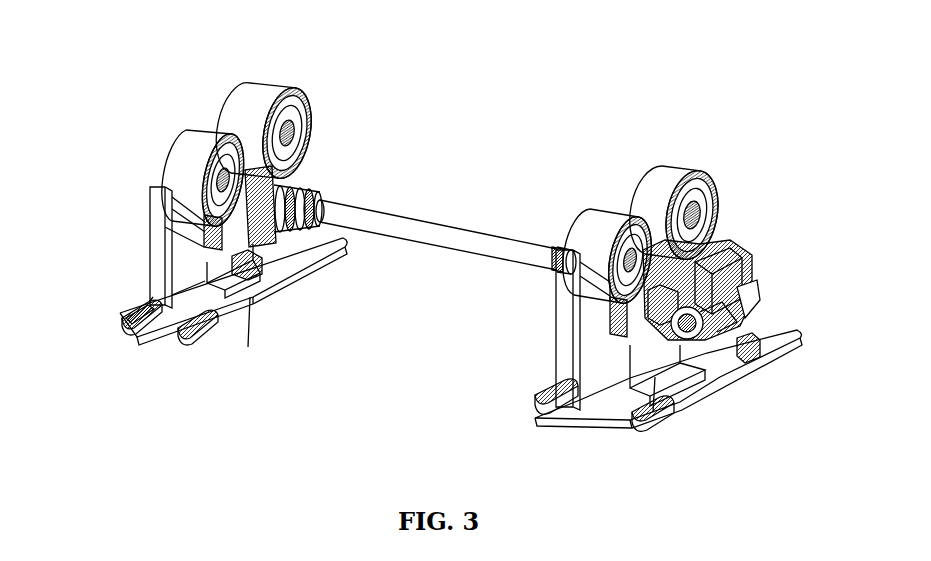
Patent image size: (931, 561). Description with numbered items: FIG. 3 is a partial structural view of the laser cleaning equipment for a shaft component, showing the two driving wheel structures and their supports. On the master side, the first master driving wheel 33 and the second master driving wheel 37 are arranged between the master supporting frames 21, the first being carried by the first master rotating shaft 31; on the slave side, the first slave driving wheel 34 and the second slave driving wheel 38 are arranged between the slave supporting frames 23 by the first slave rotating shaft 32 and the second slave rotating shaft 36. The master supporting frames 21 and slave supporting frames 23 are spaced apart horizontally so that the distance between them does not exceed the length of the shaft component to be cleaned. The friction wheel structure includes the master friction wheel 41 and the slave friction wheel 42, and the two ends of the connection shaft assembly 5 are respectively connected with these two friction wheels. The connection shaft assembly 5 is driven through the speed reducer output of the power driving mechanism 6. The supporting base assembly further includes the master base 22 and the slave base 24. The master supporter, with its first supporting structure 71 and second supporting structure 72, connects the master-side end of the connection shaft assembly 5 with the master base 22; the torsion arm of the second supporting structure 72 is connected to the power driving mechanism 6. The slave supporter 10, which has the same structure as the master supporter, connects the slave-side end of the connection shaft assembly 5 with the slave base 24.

The connection shaft assembly 5 is at (440, 243).
The power driving mechanism 6 is at (720, 253).
The slave supporter 10 is at (203, 250).
The master supporting frame 21 is at (543, 418).
The master base 22 is at (627, 390).
The slave supporting frame 23 is at (160, 238).
The slave base 24 is at (180, 313).
The first master rotating shaft 31 is at (598, 283).
The first slave rotating shaft 32 is at (215, 170).
The first master driving wheel 33 is at (597, 347).
The first slave driving wheel 34 is at (183, 197).
The second slave rotating shaft 36 is at (300, 115).
The second master driving wheel 37 is at (663, 198).
The second slave driving wheel 38 is at (262, 103).
The master friction wheel 41 is at (663, 260).
The slave friction wheel 42 is at (293, 140).
The first supporting structure 71 is at (707, 350).
The second supporting structure 72 is at (752, 302).